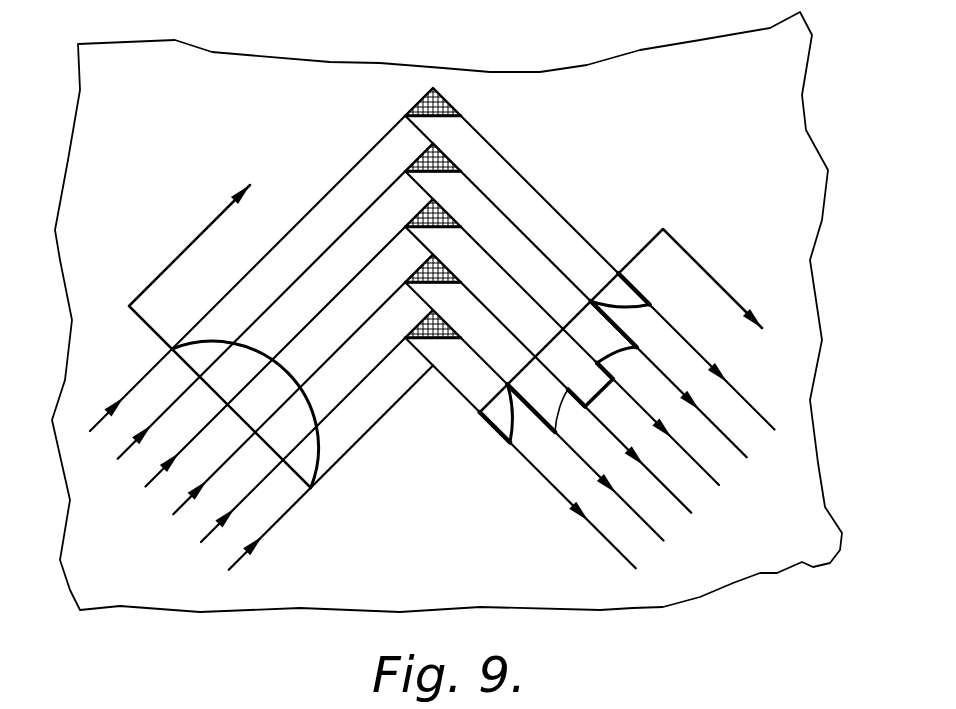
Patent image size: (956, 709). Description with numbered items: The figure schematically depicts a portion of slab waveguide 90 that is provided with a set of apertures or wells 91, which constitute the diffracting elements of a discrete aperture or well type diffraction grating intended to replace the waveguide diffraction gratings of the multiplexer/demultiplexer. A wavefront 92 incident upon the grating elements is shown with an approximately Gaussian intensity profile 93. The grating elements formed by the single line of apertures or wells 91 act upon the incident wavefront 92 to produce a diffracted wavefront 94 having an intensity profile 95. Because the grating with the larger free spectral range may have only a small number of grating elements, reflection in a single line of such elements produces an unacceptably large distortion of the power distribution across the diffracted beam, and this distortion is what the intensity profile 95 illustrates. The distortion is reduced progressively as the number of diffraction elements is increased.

The slab waveguide 90 is at (762, 152).
The apertures or wells 91 is at (448, 320).
The wavefront 92 is at (263, 350).
The intensity profile 93 is at (263, 350).
The diffracted wavefront 94 is at (548, 343).
The intensity profile 95 is at (555, 432).